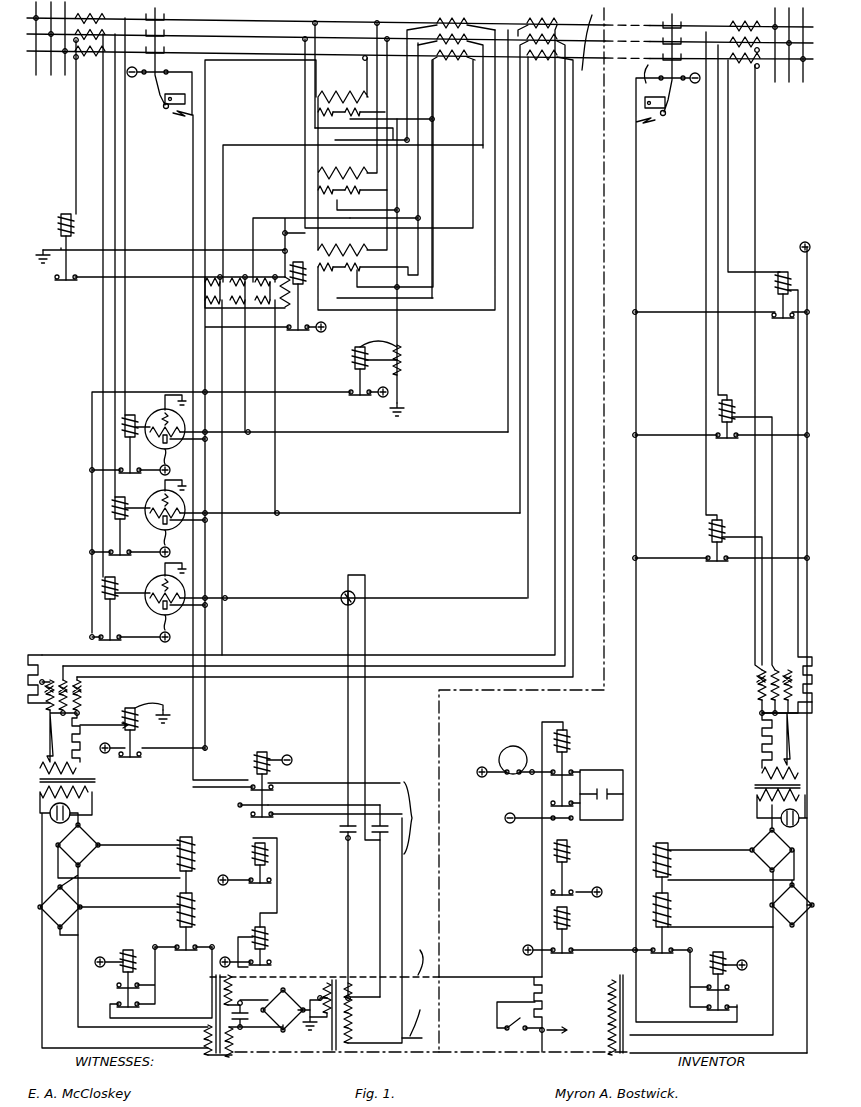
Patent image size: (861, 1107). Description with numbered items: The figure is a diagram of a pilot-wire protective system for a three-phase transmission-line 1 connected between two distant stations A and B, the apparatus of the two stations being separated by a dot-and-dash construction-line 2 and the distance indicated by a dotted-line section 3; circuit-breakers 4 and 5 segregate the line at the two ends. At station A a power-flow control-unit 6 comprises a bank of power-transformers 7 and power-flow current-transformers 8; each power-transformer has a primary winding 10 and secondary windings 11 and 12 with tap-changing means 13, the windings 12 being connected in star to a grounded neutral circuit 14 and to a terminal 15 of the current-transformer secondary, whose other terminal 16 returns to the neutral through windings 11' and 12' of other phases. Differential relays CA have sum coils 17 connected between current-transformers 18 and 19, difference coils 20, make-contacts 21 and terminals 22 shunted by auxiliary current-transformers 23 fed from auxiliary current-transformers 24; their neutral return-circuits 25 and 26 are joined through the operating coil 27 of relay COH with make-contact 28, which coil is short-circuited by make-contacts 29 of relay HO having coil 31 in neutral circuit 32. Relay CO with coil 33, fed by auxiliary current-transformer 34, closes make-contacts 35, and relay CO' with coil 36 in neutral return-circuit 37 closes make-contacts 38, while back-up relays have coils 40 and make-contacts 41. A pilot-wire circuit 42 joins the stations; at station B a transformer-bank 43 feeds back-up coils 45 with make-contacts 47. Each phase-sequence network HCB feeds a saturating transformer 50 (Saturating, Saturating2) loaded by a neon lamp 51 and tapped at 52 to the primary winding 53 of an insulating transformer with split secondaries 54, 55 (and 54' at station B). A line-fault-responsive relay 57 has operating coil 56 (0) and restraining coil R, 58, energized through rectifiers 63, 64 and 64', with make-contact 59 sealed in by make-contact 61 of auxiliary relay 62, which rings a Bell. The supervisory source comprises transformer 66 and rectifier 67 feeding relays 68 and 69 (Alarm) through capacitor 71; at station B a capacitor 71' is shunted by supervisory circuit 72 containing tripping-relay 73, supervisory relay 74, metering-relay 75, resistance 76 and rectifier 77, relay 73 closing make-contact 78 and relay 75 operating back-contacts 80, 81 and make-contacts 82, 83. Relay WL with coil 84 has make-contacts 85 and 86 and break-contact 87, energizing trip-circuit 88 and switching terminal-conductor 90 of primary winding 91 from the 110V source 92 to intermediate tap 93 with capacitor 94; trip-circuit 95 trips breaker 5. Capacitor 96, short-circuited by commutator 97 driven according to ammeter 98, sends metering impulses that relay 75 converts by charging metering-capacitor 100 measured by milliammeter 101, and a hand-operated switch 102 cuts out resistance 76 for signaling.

The three-phase transmission-line 1 is at (586, 46).
The dot-and-dash construction-line 2 is at (604, 170).
The dotted-line section 3 is at (638, 74).
The circuit-breaker 4 is at (187, 390).
The circuit-breaker 5 is at (686, 511).
The power-flow control-unit 6 is at (389, 133).
The single-phase power-transformers 7 is at (340, 74).
The power-flow current-transformers 8 is at (451, 158).
The primary winding 10 is at (318, 93).
The secondary winding 11 is at (323, 110).
The secondary winding 11' is at (324, 135).
The secondary winding 12 is at (374, 118).
The secondary winding 12' is at (406, 170).
The tap-changing means 13 is at (302, 127).
The grounded neutral circuit 14 is at (398, 328).
The terminal 15 is at (430, 93).
The other terminal 16 is at (472, 110).
The sum coils 17 is at (150, 590).
The current-transformers 18 is at (89, 47).
The current-transformers 19 is at (307, 347).
The difference coils 20 is at (165, 565).
The make-contact 21 is at (165, 612).
The terminals 22 is at (225, 598).
The auxiliary current-transformers 23 is at (203, 286).
The auxiliary current-transformers 24 is at (290, 66).
The neutral return-circuit 25 is at (285, 292).
The neutral return-circuit 26 is at (284, 234).
The operating coil 27 is at (284, 253).
The make-contact 28 is at (306, 308).
The make-contacts 29 is at (57, 278).
The operating coil 31 is at (61, 222).
The neutral circuit 32 is at (75, 108).
The operating coil 33 is at (354, 360).
The auxiliary current-transformer 34 is at (404, 358).
The make-contacts 35 is at (350, 390).
The operating coil 36 is at (124, 716).
The grounded neutral return-circuit 37 is at (104, 723).
The make-contacts 38 is at (144, 751).
The operating coils 40 is at (105, 594).
The make-contacts 41 is at (100, 637).
The pilot-wire circuit 42 is at (324, 994).
The line-current transformer-bank 43 is at (745, 51).
The operating coils 45 is at (785, 265).
The make-contacts 47 is at (775, 322).
The saturating transformer 50 is at (95, 781).
The neon lamp 51 is at (70, 813).
The tapped output 52 is at (92, 792).
The primary winding 53 is at (204, 1034).
The secondary winding 54 is at (409, 1042).
The secondary winding 54' is at (623, 963).
The secondary winding 55 is at (232, 979).
The operating coil 56 is at (180, 902).
The line-fault-responsive relay 57 is at (184, 828).
The restraining coil 58 is at (180, 849).
The make-contact 59 is at (172, 952).
The make-contact 61 is at (141, 1003).
The auxiliary relay 62 is at (124, 952).
The full-wave rectifier 63 is at (80, 909).
The full-wave rectifier 64 is at (132, 925).
The full-wave rectifier 64' is at (741, 877).
The step-down transformer 66 is at (319, 1040).
The full-wave rectifier 67 is at (314, 1014).
The undercurrent direct-current supervisory relay 68 is at (268, 848).
The overcurrent direct-current supervisory relay 69 is at (267, 923).
The capacitor 71 is at (285, 1019).
The bypassing capacitor 71' is at (563, 1001).
The supervisory direct-current circuit 72 is at (567, 926).
The overcurrent direct-current tripping-relay 73 is at (567, 910).
The undercurrent direct-current supervisory relay 74 is at (567, 845).
The metering-relay 75 is at (567, 760).
The resistance 76 is at (534, 995).
The rectifier 77 is at (550, 1039).
The make-contact 78 is at (550, 948).
The back-contact 80 is at (545, 818).
The back-contact 81 is at (548, 788).
The make-contact 82 is at (548, 803).
The make-contact 83 is at (595, 775).
The operating coil 84 is at (273, 753).
The make-contact 85 is at (248, 782).
The make-contact 86 is at (240, 805).
The break-contact 87 is at (251, 818).
The trip-circuit 88 is at (193, 776).
The terminal-conductor 90 is at (348, 908).
The primary winding 91 is at (350, 1024).
The 110-volt alternating-current source 92 is at (400, 794).
The intermediate tap 93 is at (352, 1000).
The capacitor 94 is at (380, 828).
The trip-circuit 95 is at (635, 594).
The capacitor 96 is at (340, 828).
The rotating commutator 97 is at (344, 602).
The ammeter 98 is at (346, 592).
The metering-capacitor 100 is at (601, 799).
The direct-current milliammeter 101 is at (502, 754).
The hand-operated switch 102 is at (505, 1033).
The station A is at (51, 47).
The station B is at (789, 53).
The instantaneous overcurrent relay HO is at (60, 195).
The relay CO is at (361, 336).
The relay CO' is at (133, 700).
The overcurrent relay COH is at (322, 315).
The differential relays CA is at (320, 432).
The phase-sequence network HCB is at (423, 711).
The auxiliary relay WL is at (256, 740).
The restraining coil R is at (423, 859).
The relay D is at (645, 910).
The operating coil 0 is at (199, 902).
The bell Bell is at (112, 983).
The alarm circuit Alarm is at (324, 890).
The saturating transformer Saturating is at (95, 782).
The saturating transformer Saturating2 is at (755, 786).
The 110-volt alternating-current source 110V is at (442, 802).